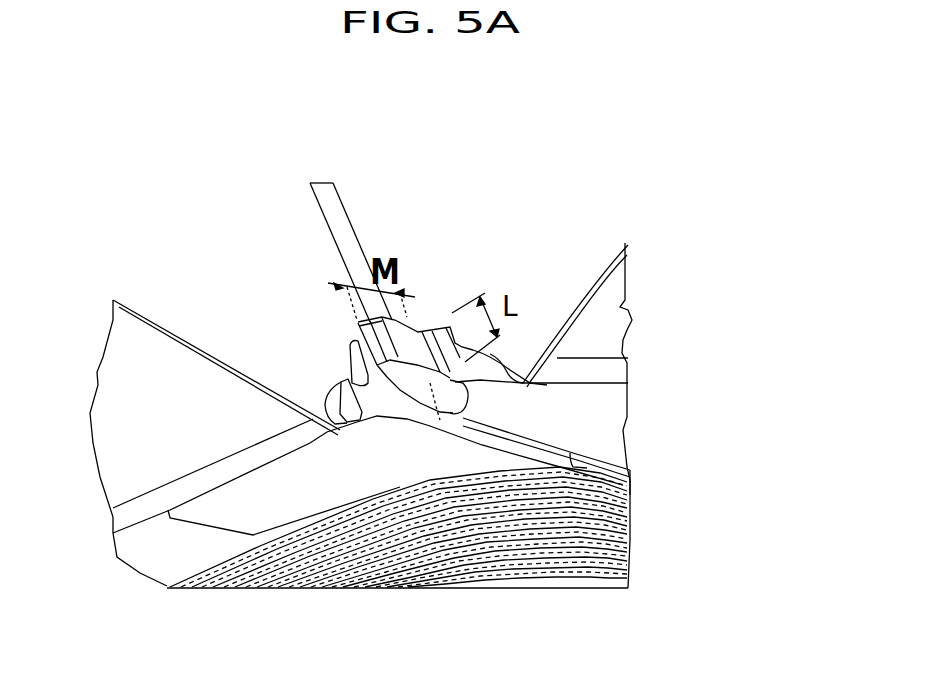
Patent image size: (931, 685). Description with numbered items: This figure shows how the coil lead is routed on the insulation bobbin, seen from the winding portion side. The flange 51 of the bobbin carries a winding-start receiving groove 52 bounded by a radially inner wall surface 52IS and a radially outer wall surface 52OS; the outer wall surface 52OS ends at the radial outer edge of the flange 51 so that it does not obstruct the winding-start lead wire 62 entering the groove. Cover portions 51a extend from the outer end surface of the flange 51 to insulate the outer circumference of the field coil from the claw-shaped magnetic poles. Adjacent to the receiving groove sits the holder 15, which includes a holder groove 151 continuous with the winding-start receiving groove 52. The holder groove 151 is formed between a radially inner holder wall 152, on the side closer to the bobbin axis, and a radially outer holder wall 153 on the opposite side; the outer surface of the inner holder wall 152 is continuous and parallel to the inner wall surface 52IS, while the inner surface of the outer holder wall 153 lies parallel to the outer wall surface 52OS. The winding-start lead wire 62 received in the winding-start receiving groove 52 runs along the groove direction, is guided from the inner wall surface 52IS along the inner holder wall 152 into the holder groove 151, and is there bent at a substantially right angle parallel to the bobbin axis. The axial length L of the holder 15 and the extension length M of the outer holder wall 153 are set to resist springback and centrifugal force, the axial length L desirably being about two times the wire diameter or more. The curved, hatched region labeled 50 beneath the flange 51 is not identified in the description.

The holder 15 is at (345, 353).
The holder groove 151 is at (345, 358).
The radially inner holder wall 152 is at (340, 380).
The radially outer holder wall 153 is at (417, 327).
The disc 50 is at (350, 570).
The flange 51 is at (573, 413).
The cover portion 51a is at (170, 343).
The winding-start receiving groove 52 is at (490, 450).
The radially outer wall surface 52OS is at (587, 467).
The radially inner wall surface 52IS is at (630, 487).
The winding-start lead wire 62 is at (355, 258).